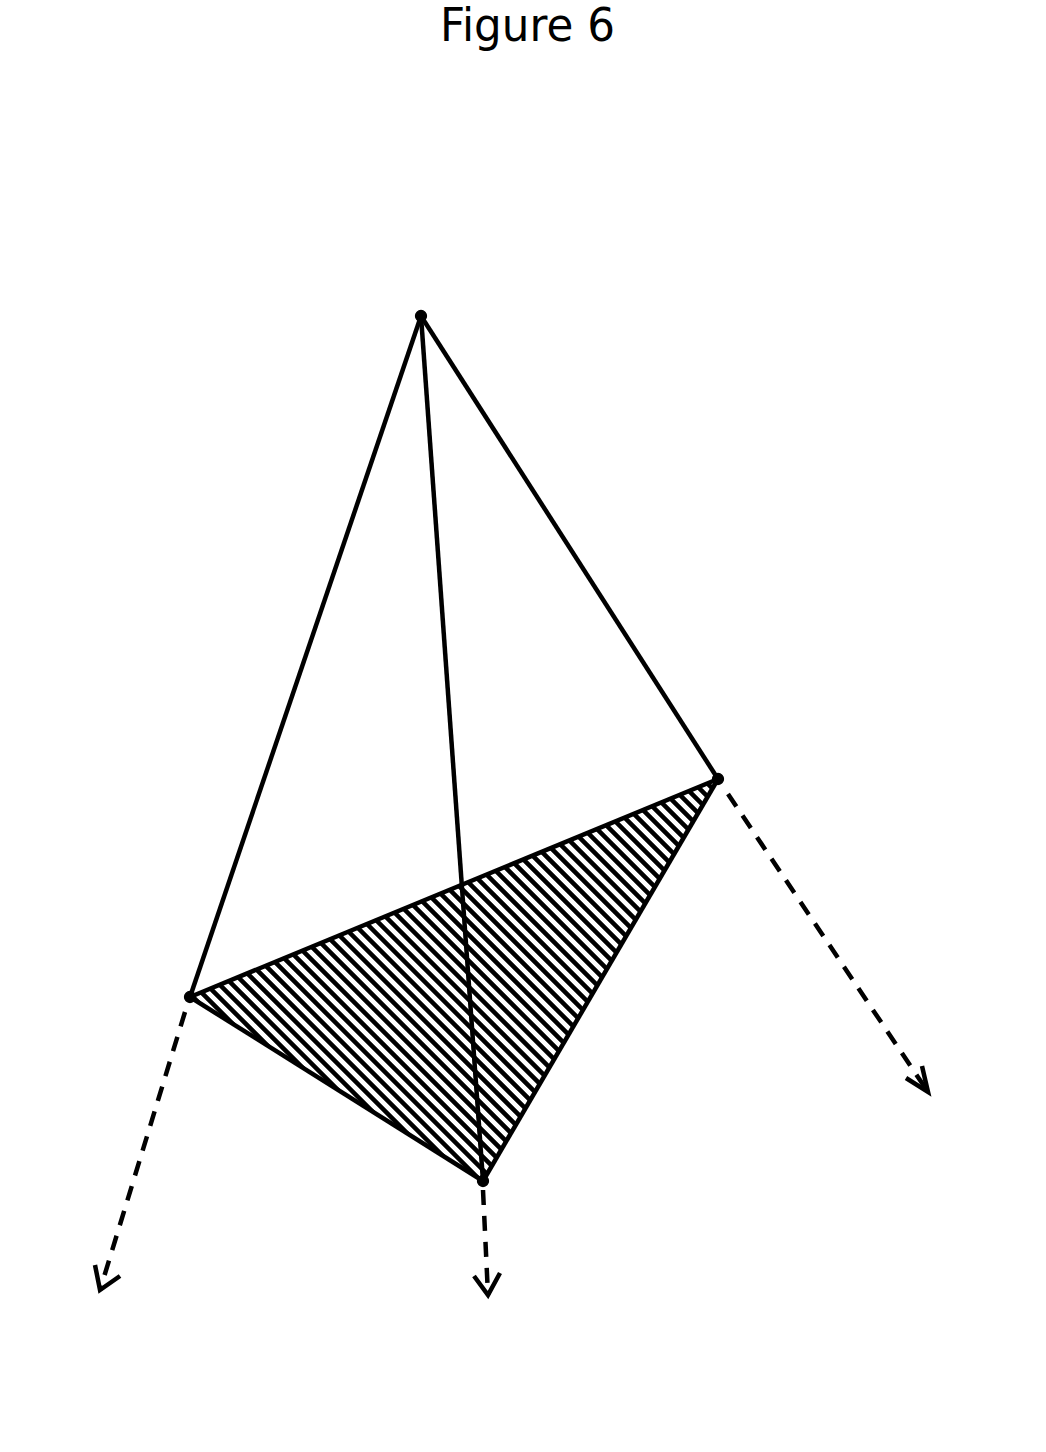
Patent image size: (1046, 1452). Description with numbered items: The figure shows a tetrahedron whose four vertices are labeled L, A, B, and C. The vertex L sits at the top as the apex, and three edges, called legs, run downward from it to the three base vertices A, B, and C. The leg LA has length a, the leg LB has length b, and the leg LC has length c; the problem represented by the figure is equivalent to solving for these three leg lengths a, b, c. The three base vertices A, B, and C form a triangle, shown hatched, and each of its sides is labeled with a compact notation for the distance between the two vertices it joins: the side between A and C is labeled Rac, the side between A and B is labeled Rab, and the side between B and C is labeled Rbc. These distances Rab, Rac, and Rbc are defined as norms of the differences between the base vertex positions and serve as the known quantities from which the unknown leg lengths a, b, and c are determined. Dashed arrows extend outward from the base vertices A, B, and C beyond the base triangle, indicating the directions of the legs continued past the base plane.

The vertex L is at (428, 291).
The vertex A is at (821, 926).
The vertex B is at (502, 1231).
The vertex C is at (145, 1131).
The length of edge LA a is at (569, 547).
The length of edge LB b is at (453, 748).
The length of edge LC c is at (305, 656).
The distance between base vertices Rac is at (454, 888).
The distance between base vertices Rab is at (600, 980).
The distance between base vertices Rbc is at (336, 1089).